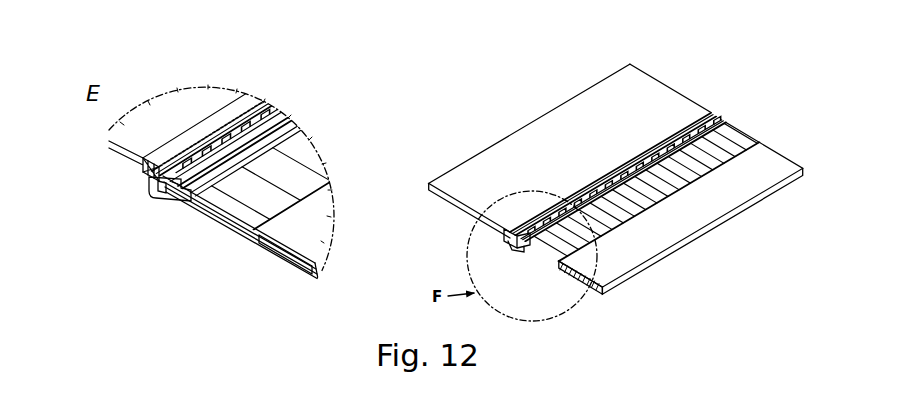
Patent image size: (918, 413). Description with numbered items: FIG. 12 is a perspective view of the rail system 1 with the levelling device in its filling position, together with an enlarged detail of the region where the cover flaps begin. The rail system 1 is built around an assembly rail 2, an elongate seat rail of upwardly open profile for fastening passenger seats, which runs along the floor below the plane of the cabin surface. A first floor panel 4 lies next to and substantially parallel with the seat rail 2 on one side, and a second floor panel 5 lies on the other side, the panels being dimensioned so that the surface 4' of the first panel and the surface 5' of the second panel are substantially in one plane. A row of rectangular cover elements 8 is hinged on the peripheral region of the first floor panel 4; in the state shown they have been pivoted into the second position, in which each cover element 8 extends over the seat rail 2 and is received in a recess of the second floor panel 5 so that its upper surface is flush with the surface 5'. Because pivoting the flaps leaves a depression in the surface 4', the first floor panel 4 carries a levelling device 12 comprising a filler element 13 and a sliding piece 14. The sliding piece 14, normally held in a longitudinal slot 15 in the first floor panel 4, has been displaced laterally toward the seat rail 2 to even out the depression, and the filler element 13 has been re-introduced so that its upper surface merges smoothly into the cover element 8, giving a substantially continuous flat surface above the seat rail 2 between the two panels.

The rail system 1 is at (530, 103).
The assembly rail 2 is at (160, 204).
The first floor panel 4 is at (484, 209).
The surface of the first panel 4' is at (315, 191).
The second floor panel 5 is at (378, 151).
The surface of the second panel 5' is at (201, 104).
The cover element 8 is at (168, 164).
The levelling device 12 is at (248, 251).
The filler element 13 is at (215, 209).
The sliding piece 14 is at (228, 211).
The longitudinal slot 15 is at (287, 251).